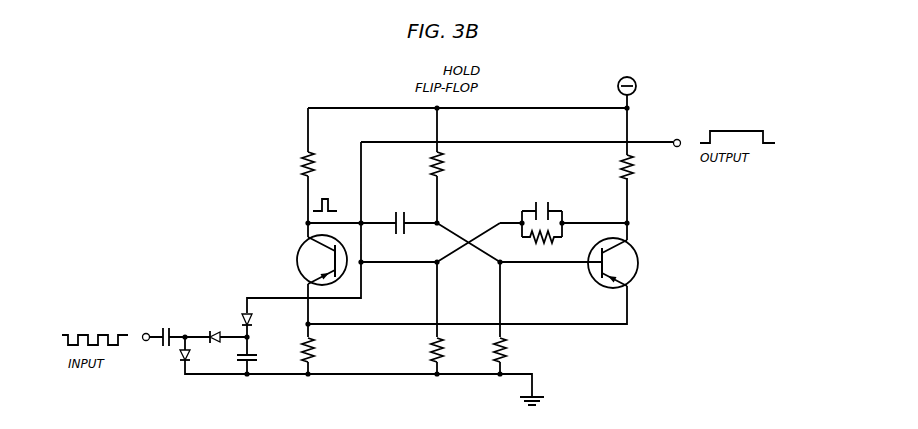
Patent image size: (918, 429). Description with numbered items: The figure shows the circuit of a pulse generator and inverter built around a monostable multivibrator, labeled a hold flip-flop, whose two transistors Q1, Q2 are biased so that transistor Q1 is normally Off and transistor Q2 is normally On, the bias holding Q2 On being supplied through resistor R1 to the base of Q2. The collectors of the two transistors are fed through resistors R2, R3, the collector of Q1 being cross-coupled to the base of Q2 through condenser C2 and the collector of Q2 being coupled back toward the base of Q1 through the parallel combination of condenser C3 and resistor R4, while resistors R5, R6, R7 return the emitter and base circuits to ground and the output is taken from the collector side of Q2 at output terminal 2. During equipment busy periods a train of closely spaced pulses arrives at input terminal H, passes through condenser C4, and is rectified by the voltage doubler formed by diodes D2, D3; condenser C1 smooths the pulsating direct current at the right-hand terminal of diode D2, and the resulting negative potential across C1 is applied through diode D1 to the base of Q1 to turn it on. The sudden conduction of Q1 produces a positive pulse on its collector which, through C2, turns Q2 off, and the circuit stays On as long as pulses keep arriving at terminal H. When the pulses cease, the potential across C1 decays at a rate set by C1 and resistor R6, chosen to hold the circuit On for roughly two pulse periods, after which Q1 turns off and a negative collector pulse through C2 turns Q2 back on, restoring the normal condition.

The resistor R1 is at (447, 164).
The resistor R2 is at (318, 164).
The resistor R3 is at (637, 167).
The resistor R4 is at (542, 235).
The resistor R5 is at (318, 350).
The resistor R6 is at (447, 350).
The resistor R7 is at (511, 350).
The condenser C1 is at (256, 361).
The condenser C2 is at (407, 217).
The condenser C3 is at (542, 203).
The condenser C4 is at (164, 327).
The diode D1 is at (258, 316).
The diode D2 is at (216, 325).
The diode D3 is at (172, 364).
The transistor Q1 is at (297, 262).
The transistor Q2 is at (638, 263).
The output terminal 2 is at (676, 137).
The input terminal H is at (144, 347).